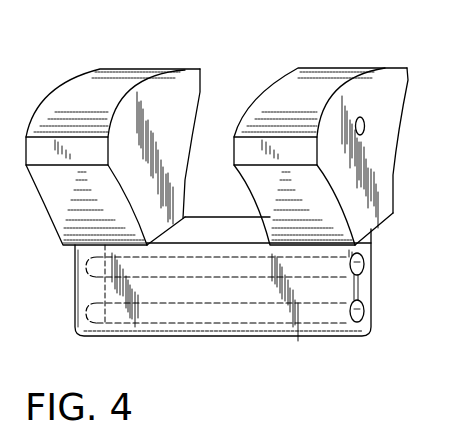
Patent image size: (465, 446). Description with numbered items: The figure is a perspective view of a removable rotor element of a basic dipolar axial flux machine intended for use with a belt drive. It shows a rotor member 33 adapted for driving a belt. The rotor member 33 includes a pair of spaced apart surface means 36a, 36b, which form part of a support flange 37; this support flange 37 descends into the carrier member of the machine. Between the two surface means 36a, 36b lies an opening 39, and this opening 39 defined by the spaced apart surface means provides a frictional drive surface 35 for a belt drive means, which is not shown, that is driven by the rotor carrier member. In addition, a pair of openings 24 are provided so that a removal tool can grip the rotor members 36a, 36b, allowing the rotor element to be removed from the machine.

The openings 24 is at (363, 121).
The rotor member 33 is at (70, 293).
The frictional drive surface 35 is at (197, 228).
The surface means 36a is at (329, 85).
The surface means 36b is at (82, 93).
The support flange 37 is at (290, 336).
The opening 39 is at (225, 108).